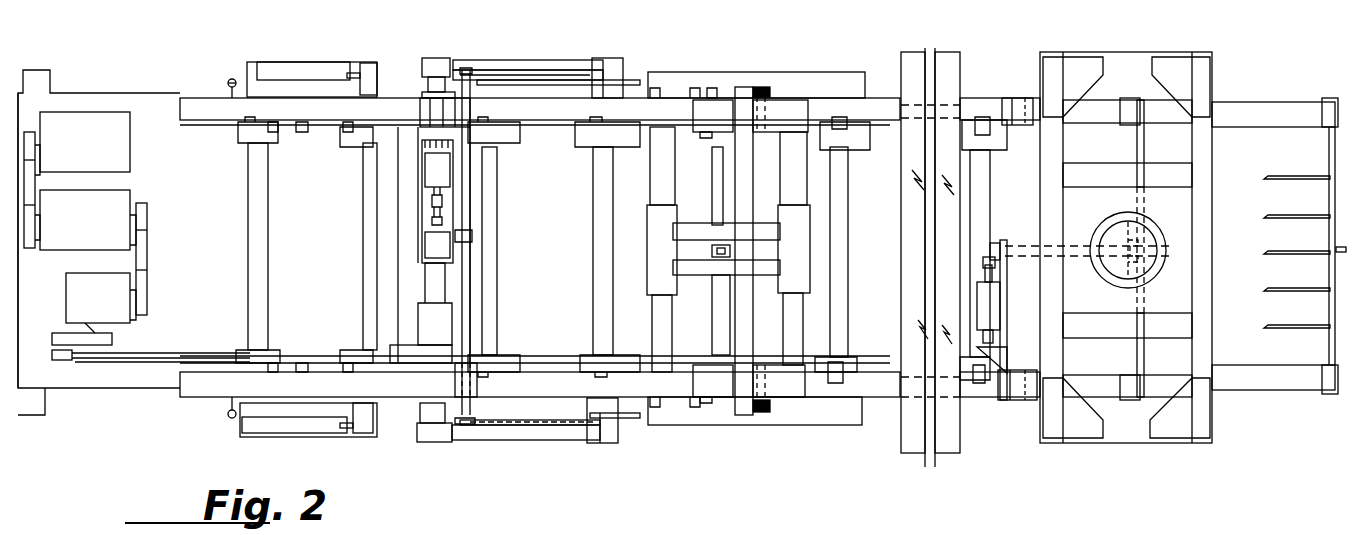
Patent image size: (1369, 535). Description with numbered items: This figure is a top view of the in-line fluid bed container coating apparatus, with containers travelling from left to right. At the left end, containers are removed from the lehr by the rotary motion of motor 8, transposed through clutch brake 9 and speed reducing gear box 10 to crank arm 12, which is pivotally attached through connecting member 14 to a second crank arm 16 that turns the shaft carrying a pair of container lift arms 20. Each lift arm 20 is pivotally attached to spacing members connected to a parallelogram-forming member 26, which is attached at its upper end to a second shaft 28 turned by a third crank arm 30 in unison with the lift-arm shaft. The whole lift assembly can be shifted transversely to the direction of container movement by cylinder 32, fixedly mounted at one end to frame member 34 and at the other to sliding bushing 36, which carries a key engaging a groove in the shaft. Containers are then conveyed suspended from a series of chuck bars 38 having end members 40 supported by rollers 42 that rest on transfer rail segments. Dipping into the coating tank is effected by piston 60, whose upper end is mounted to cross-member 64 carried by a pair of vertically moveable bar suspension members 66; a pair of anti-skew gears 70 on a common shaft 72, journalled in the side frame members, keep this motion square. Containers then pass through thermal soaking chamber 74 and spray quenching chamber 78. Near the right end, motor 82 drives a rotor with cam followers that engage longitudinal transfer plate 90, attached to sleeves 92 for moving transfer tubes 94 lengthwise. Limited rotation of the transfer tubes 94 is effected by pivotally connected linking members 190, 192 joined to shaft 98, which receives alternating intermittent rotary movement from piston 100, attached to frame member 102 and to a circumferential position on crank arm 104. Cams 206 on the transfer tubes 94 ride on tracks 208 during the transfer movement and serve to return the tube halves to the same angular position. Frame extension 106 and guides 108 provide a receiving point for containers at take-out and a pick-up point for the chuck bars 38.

The motor 8 is at (120, 142).
The clutch brake 9 is at (120, 205).
The speed reducing gear box 10 is at (80, 305).
The crank arm 12 is at (88, 345).
The connecting member 14 is at (130, 360).
The second crank arm 16 is at (422, 372).
The container lift arm 20 is at (502, 62).
The parallelogram-forming member 26 is at (560, 72).
The second shaft 28 is at (468, 283).
The third crank arm 30 is at (472, 240).
The cylinder 32 is at (440, 170).
The frame member 34 is at (432, 103).
The sliding bushing 36 is at (435, 248).
The chuck bar 38 is at (365, 268).
The end member 40 is at (352, 150).
The roller 42 is at (343, 130).
The piston 60 is at (717, 258).
The cross-member 64 is at (744, 100).
The bar suspension member 66 is at (713, 90).
The anti-skew gear 70 is at (762, 88).
The common shaft 72 is at (775, 190).
The thermal soaking chamber 74 is at (910, 60).
The spray quenching chamber 78 is at (947, 60).
The motor 82 is at (1113, 248).
The longitudinal transfer plate 90 is at (1008, 187).
The sleeve 92 is at (1020, 97).
The transfer tube 94 is at (970, 110).
The shaft 98 is at (1053, 246).
The piston 100 is at (985, 302).
The frame member 102 is at (1010, 360).
The crank arm 104 is at (1000, 262).
The frame extension 106 is at (1250, 102).
The guide 108 is at (1285, 218).
The linking member 190 is at (1144, 355).
The linking member 192 is at (1144, 145).
The cam 206 is at (232, 78).
The track 208 is at (290, 62).